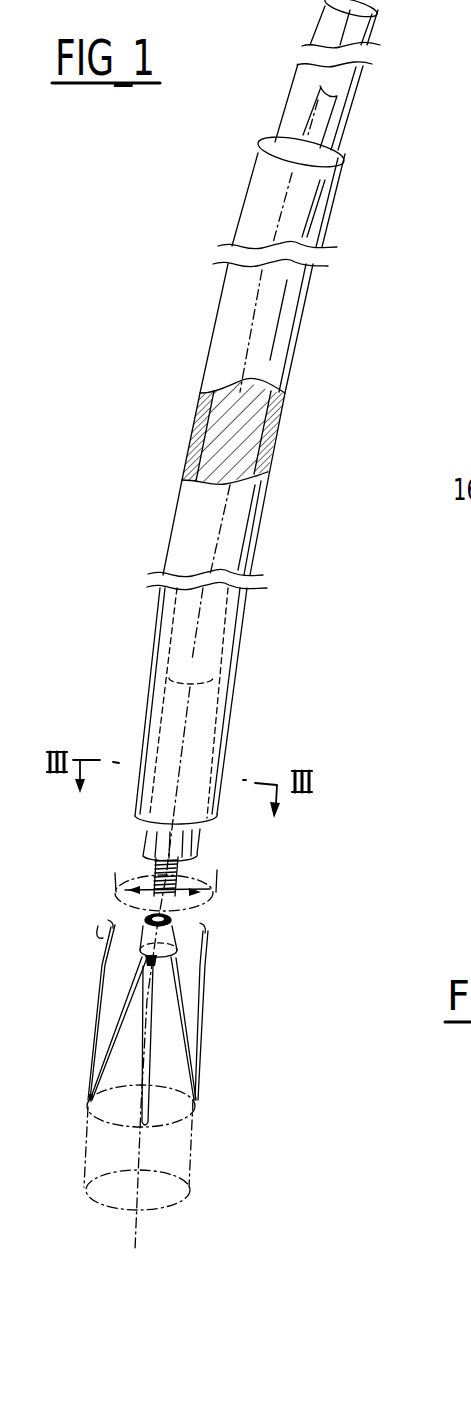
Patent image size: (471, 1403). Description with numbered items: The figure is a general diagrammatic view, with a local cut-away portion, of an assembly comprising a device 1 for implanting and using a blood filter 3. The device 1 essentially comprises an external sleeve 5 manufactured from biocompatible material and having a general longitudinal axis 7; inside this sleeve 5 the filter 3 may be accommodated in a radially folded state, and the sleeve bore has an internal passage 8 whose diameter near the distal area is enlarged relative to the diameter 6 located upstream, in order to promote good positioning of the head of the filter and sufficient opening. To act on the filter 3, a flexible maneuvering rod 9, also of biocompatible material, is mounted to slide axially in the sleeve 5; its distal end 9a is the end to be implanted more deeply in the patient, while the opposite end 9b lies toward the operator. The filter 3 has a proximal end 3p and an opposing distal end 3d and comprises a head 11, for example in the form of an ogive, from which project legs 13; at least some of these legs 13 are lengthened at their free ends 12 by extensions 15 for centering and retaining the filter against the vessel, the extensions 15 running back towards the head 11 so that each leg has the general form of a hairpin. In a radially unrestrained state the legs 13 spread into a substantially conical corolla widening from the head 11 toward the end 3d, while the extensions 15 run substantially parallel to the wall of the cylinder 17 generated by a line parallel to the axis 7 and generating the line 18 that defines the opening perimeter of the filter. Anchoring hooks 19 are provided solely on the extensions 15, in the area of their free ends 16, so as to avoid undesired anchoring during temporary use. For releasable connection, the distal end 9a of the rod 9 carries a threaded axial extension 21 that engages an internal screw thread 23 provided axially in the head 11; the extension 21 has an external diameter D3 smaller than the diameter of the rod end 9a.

The device 1 is at (171, 386).
The blood filter 3 is at (169, 1035).
The proximal end 3p is at (108, 920).
The distal end 3d is at (140, 1126).
The external sleeve 5 is at (260, 470).
The internal passage diameter 6 is at (282, 395).
The longitudinal axis 7 is at (348, 123).
The axial internal passage 8 is at (168, 780).
The maneuvering rod 9 is at (245, 427).
The distal end of rod 9a is at (197, 842).
The proximal end of core rod 9b is at (370, 32).
The head 11 is at (173, 950).
The free ends of legs 12 is at (90, 1105).
The legs 13 is at (125, 1002).
The extensions 15 is at (93, 1043).
The free ends of extensions 16 is at (205, 933).
The cylinder 17 is at (85, 1160).
The opening perimeter line 18 is at (168, 1128).
The hooks 19 is at (98, 926).
The threaded axial extension 21 is at (153, 892).
The internal screw thread 23 is at (173, 918).
The external diameter of extension D3 is at (207, 885).